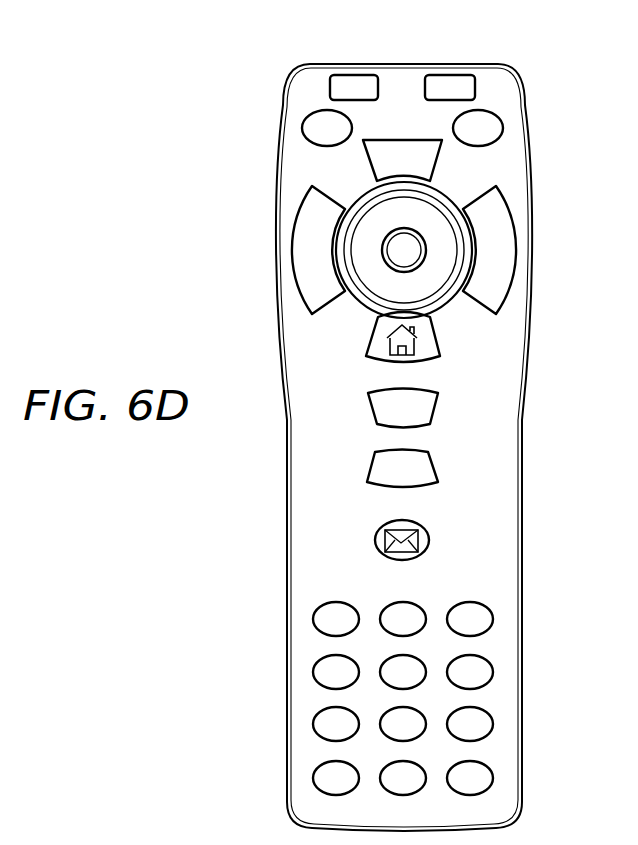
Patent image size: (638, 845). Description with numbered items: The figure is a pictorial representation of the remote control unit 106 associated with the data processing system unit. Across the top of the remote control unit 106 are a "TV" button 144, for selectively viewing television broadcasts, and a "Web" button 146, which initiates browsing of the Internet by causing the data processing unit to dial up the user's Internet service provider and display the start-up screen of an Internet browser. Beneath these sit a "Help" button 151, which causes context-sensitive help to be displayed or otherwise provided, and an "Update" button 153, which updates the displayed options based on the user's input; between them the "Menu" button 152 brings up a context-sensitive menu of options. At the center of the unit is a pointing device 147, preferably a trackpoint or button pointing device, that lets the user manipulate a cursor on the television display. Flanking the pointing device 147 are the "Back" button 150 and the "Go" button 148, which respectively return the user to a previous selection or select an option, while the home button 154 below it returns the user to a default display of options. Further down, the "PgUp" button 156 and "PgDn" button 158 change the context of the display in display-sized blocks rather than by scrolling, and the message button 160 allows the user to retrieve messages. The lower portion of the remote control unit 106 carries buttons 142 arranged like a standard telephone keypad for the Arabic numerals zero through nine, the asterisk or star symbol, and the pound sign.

The remote control unit 106 is at (522, 492).
The buttons 142 is at (536, 603).
The TV button 144 is at (357, 74).
The Web button 146 is at (448, 74).
The pointing device 147 is at (407, 242).
The Go button 148 is at (516, 250).
The Back button 150 is at (292, 249).
The Help button 151 is at (302, 128).
The Menu button 152 is at (377, 139).
The Update button 153 is at (503, 128).
The home button 154 is at (372, 332).
The PgUp button 156 is at (438, 410).
The PgDn button 158 is at (373, 460).
The message button 160 is at (375, 540).